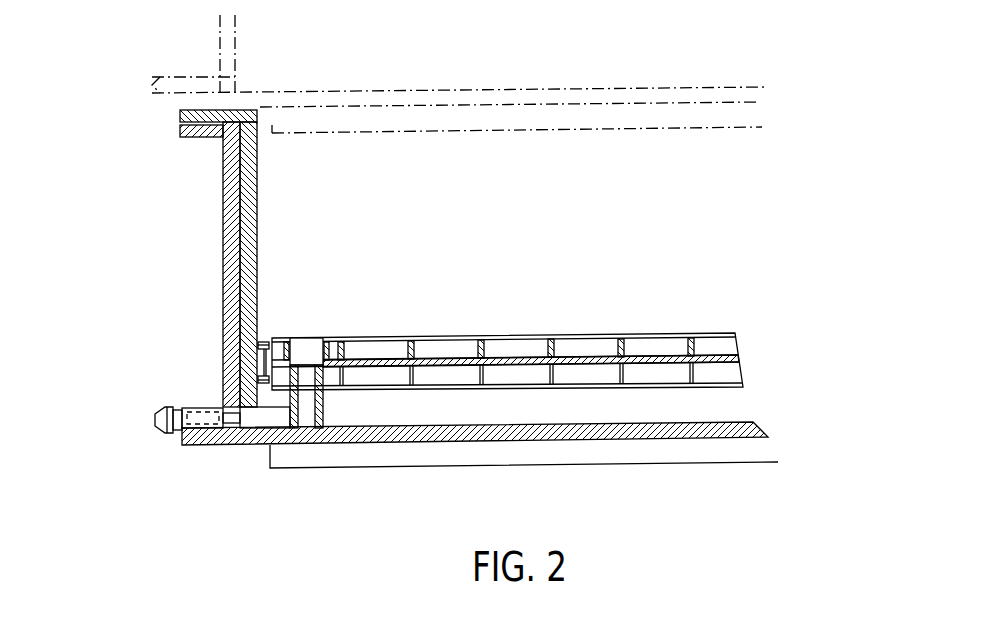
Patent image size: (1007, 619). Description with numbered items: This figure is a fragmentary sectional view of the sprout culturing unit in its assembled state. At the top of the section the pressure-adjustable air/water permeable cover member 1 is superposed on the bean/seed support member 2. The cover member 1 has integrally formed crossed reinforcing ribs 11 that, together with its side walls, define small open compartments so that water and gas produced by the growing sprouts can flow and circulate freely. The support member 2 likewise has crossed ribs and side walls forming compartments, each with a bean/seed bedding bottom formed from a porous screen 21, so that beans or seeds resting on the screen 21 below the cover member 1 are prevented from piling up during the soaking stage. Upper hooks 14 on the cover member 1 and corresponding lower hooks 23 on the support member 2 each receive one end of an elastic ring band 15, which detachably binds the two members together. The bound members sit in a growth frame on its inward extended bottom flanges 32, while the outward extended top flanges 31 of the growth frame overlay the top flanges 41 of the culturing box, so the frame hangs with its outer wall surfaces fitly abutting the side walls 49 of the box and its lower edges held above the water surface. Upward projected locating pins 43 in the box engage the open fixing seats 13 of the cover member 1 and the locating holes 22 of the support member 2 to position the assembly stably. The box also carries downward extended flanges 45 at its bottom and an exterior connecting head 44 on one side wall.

The pressure-adjustable air/water permeable cover member 1 is at (564, 318).
The bean/seed support member 2 is at (747, 373).
The crossed reinforcing ribs 11 is at (568, 330).
The open fixing seats 13 is at (313, 338).
The upper hooks 14 is at (227, 342).
The elastic ring band 15 is at (227, 362).
The porous screen 21 is at (725, 373).
The locating holes 22 is at (327, 392).
The lower hooks 23 is at (227, 390).
The outward extended top flanges 31 is at (180, 118).
The inward extended bottom flanges 32 is at (233, 448).
The outward extended top flanges 41 is at (180, 134).
The upward projected locating pins 43 is at (257, 458).
The exterior connecting head 44 is at (155, 418).
The downward extended flanges 45 is at (748, 113).
The side walls 49 is at (223, 247).